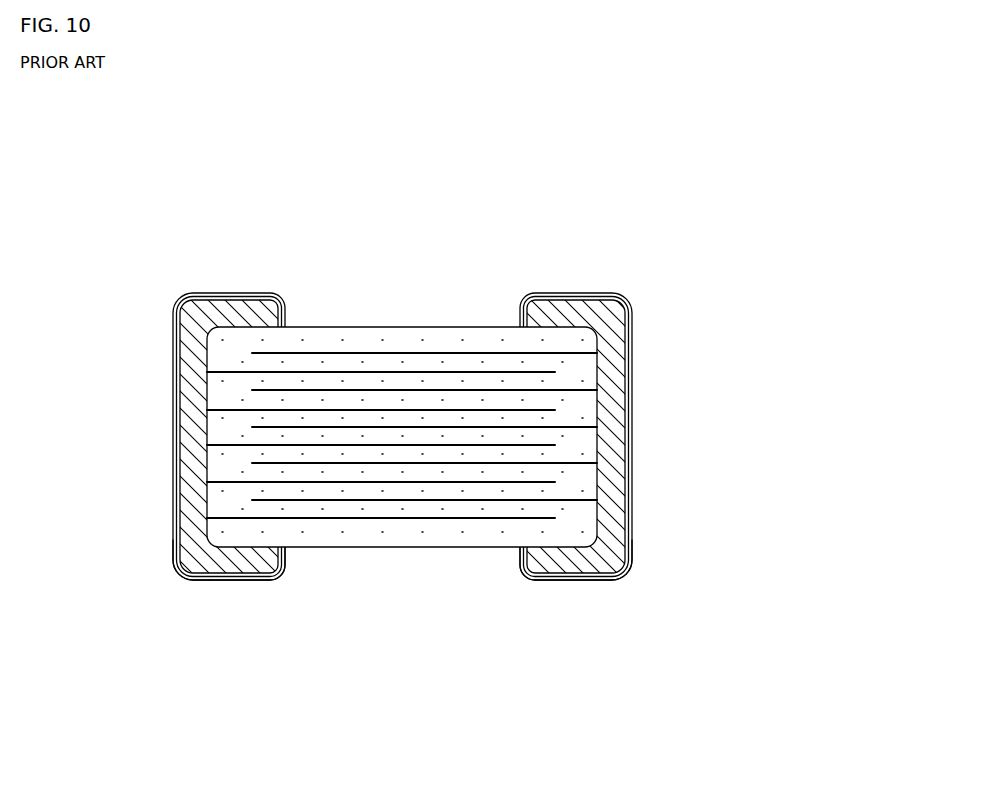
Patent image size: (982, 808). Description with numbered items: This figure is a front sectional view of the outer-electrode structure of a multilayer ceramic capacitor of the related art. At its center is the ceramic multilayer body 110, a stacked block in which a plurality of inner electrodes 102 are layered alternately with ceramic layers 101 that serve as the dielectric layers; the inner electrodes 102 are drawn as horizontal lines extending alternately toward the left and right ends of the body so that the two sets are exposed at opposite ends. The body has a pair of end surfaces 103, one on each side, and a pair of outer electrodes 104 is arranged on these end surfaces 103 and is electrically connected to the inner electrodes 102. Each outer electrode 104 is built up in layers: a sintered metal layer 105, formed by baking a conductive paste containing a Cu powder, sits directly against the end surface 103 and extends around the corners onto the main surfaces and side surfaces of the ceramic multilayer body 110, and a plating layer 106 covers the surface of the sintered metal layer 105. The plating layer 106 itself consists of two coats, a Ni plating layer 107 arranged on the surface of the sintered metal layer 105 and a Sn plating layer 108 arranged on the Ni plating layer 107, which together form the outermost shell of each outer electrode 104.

The ceramic multilayer body 110 is at (465, 323).
The ceramic layer 101 is at (436, 424).
The inner electrode 102 is at (337, 410).
The end surface 103 is at (203, 392).
The outer electrode 104 is at (467, 452).
The sintered metal layer 105 is at (187, 443).
The plating layer 106 is at (397, 623).
The Ni plating layer 107 is at (188, 581).
The Sn plating layer 108 is at (235, 581).